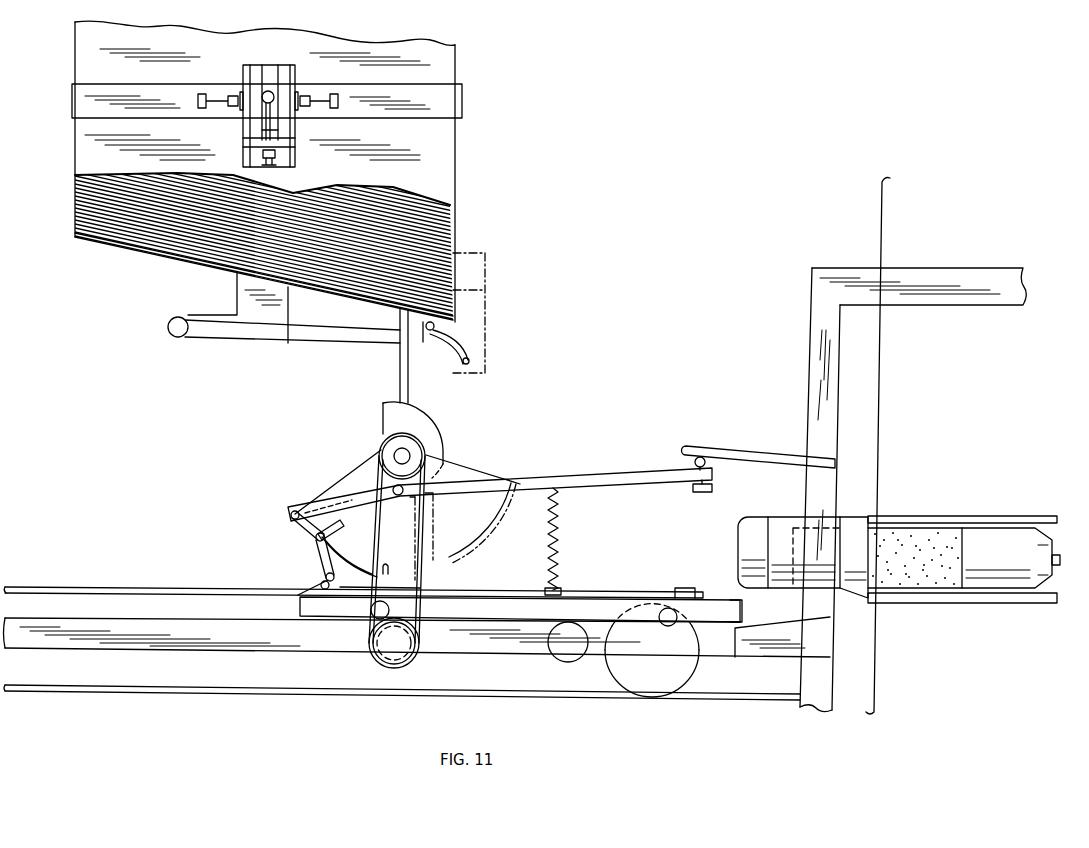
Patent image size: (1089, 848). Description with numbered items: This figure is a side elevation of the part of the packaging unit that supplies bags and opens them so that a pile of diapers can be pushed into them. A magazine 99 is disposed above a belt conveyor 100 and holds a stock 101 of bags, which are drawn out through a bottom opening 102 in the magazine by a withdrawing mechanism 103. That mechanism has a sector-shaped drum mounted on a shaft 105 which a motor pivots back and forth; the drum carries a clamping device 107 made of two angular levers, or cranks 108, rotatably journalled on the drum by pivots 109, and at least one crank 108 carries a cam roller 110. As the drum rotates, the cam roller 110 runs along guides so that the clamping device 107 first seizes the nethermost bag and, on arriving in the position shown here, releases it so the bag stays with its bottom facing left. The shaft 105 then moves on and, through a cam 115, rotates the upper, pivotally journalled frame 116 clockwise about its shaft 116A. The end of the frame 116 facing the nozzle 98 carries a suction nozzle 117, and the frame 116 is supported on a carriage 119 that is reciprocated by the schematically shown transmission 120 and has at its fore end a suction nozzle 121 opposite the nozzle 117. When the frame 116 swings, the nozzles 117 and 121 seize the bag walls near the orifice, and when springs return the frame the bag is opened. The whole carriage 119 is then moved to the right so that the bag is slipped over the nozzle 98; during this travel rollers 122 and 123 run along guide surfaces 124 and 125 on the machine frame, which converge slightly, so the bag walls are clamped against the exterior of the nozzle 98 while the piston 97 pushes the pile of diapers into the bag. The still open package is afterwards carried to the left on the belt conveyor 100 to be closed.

The piston 97 is at (990, 528).
The nozzle 98 is at (830, 526).
The magazine 99 is at (440, 162).
The belt conveyor 100 is at (188, 587).
The stock of bags 101 is at (420, 240).
The bottom opening 102 is at (378, 307).
The withdrawing mechanism 103 is at (457, 459).
The shaft 105 is at (396, 452).
The clamping device 107 is at (355, 554).
The angular levers (cranks) 108 is at (318, 563).
The pivots 109 is at (316, 537).
The cam roller 110 is at (300, 600).
The cam 115 is at (432, 425).
The frame 116 is at (622, 478).
The shaft 116A is at (398, 496).
The nozzle 117 is at (697, 492).
The carriage 119 is at (718, 640).
The transmission 120 is at (418, 667).
The suction nozzle 121 is at (697, 600).
The roller 122 is at (698, 456).
The roller 123 is at (666, 627).
The guide surface 124 is at (778, 455).
The guide surface 125 is at (770, 634).